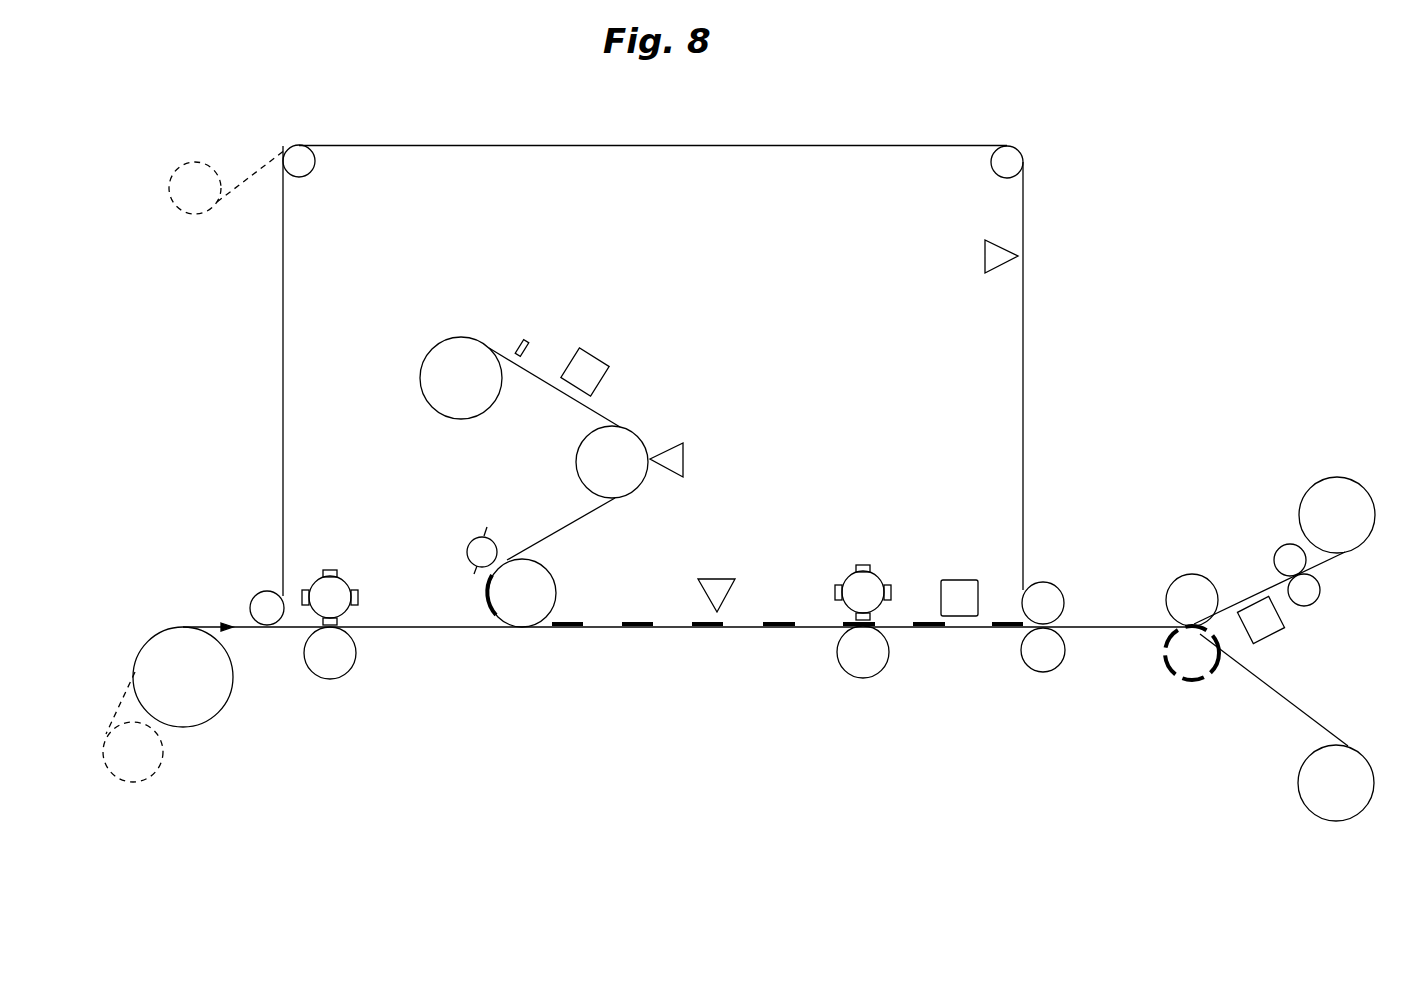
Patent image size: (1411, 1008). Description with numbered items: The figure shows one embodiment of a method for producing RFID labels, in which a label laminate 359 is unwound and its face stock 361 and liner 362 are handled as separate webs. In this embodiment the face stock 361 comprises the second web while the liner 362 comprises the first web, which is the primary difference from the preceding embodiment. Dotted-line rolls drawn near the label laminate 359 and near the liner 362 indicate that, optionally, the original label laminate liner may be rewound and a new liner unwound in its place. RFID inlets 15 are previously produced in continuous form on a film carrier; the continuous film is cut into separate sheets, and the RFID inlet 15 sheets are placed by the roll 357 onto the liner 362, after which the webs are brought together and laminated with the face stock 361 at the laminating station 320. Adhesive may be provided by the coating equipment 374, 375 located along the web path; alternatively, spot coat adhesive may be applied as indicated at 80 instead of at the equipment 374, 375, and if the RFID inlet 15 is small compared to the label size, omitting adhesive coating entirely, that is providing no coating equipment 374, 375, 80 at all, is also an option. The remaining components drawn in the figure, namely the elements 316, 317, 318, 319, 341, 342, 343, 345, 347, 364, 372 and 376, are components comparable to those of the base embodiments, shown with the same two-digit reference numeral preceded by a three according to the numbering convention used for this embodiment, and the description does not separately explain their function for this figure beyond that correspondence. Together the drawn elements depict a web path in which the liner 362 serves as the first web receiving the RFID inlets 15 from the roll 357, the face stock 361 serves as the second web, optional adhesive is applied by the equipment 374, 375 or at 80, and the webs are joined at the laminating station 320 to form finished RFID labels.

The RFID inlet 15 is at (633, 622).
The spot coat adhesive application location 80 is at (985, 256).
The cutter 316 is at (595, 333).
The knife 317 is at (534, 326).
The nip roller assembly 318 is at (834, 647).
The sensor 319 is at (951, 570).
The laminating station 320 is at (1054, 558).
The drum roller 341 is at (1173, 692).
The applicator 342 is at (1291, 640).
The guide roller 343 is at (1276, 535).
The take-up roll 345 is at (1310, 795).
The supply roll 347 is at (1322, 491).
The roll 357 is at (552, 574).
The label laminate 359 is at (208, 698).
The face stock 361 is at (472, 628).
The liner 362 is at (283, 288).
The roller assembly 364 is at (336, 548).
The roller 372 is at (422, 360).
The adhesive coating equipment 374 is at (683, 452).
The adhesive coating equipment 375 is at (723, 578).
The idler roller 376 is at (472, 537).